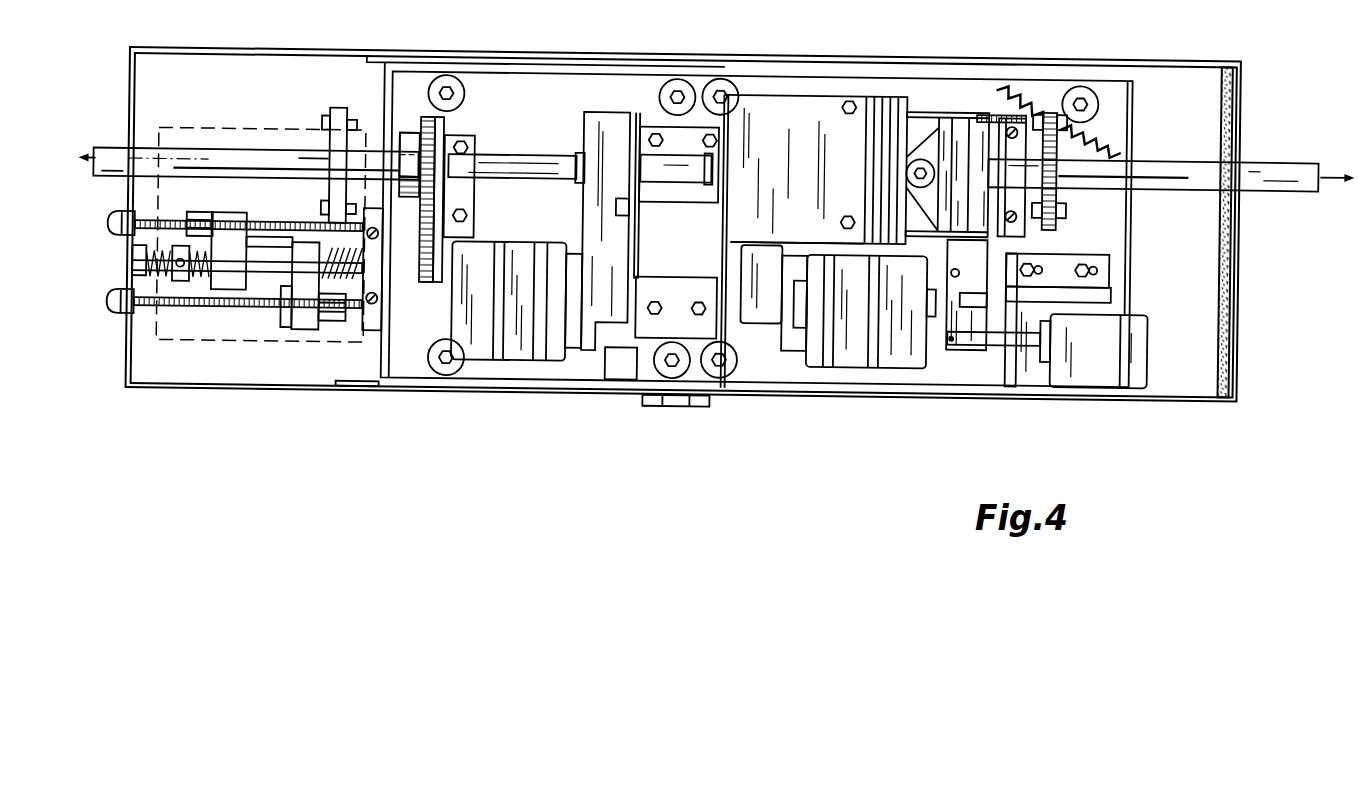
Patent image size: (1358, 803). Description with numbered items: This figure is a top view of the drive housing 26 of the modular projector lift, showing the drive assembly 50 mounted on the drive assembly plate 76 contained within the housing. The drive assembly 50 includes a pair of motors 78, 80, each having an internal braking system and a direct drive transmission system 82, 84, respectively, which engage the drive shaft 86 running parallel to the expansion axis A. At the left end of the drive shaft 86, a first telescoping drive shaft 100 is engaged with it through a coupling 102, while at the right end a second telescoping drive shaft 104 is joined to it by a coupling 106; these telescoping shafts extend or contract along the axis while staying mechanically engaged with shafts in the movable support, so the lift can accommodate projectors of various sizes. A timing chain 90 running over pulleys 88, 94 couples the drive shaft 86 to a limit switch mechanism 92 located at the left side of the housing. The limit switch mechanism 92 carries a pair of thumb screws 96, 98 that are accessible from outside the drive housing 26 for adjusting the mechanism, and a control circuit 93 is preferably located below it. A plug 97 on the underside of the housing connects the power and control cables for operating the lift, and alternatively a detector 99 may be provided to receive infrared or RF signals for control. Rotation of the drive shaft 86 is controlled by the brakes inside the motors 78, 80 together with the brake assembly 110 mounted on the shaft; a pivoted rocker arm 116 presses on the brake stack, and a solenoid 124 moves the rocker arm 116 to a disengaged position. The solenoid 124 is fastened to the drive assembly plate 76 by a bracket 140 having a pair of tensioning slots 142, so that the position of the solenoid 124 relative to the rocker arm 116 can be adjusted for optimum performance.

The drive housing 26 is at (1113, 57).
The drive assembly 50 is at (752, 364).
The drive assembly plate 76 is at (527, 93).
The motor 78 is at (488, 352).
The motor 80 is at (863, 356).
The direct drive transmission system 82 is at (614, 122).
The direct drive transmission system 84 is at (777, 313).
The drive shaft 86 is at (523, 158).
The pulley 88 is at (409, 139).
The timing chain 90 is at (425, 114).
The limit switch mechanism 92 is at (246, 340).
The control circuit 93 is at (197, 343).
The pulley 94 is at (413, 262).
The thumb screw 96 is at (113, 228).
The plug 97 is at (678, 403).
The thumb screw 98 is at (116, 314).
The detector 99 is at (617, 377).
The first telescoping drive shaft 100 is at (231, 159).
The coupling 102 is at (328, 127).
The second telescoping drive shaft 104 is at (1190, 160).
The coupling 106 is at (1052, 112).
The brake assembly 110 is at (927, 96).
The rocker arm 116 is at (974, 90).
The solenoid 124 is at (1100, 370).
The bracket 140 is at (1103, 306).
The tensioning slots 142 is at (1100, 263).